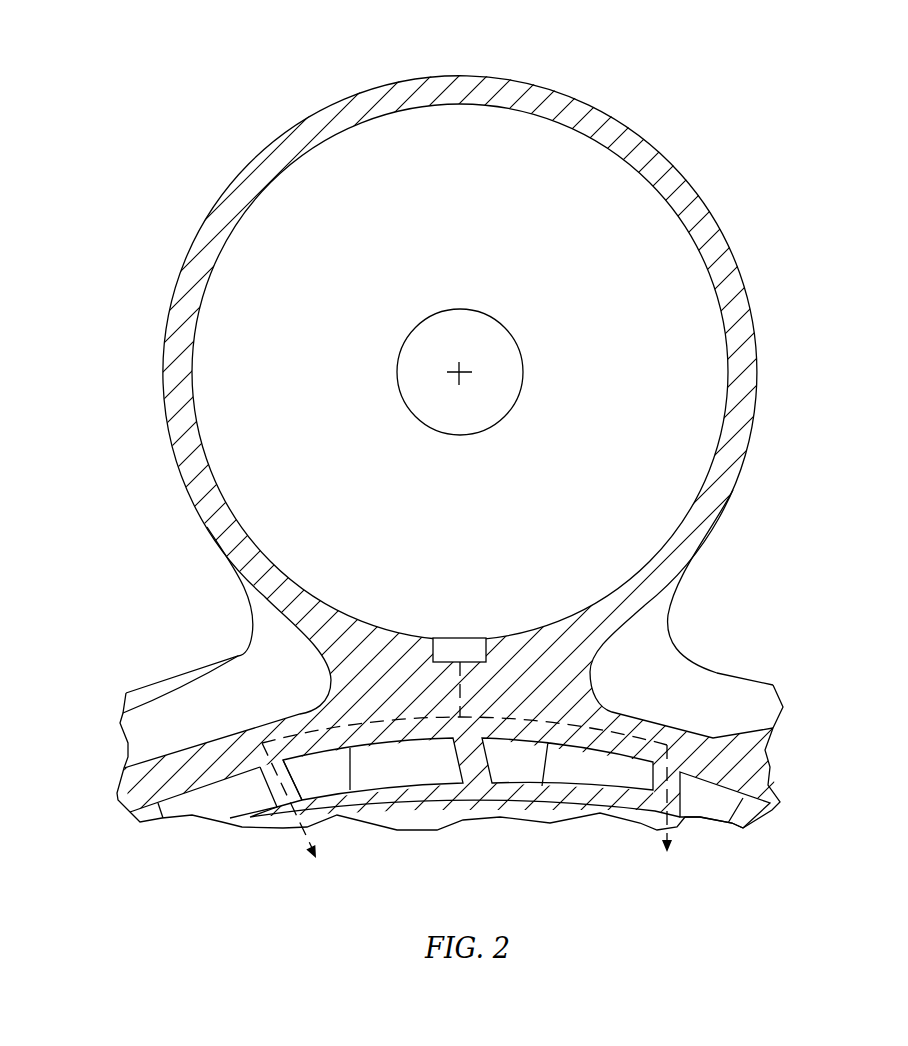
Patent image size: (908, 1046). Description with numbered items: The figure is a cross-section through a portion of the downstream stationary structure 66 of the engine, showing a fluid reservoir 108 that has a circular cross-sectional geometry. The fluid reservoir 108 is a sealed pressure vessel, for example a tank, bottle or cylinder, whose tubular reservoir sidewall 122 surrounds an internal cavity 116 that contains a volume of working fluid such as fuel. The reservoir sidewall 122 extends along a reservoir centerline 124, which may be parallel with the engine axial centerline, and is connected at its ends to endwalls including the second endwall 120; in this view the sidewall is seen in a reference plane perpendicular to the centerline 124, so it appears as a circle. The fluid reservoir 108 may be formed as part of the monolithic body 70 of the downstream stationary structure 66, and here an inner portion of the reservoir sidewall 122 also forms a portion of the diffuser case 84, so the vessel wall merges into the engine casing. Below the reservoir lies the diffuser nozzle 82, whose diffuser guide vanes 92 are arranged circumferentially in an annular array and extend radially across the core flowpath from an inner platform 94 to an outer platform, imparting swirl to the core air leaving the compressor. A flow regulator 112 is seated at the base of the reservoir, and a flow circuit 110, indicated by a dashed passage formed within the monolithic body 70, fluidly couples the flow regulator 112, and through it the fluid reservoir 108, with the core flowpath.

The fluid reservoir 108 is at (621, 119).
The downstream stationary structure 66 is at (749, 131).
The monolithic body 70 is at (227, 672).
The reservoir sidewall 122 is at (760, 375).
The second endwall 120 is at (258, 437).
The internal cavity 116 is at (603, 492).
The reservoir centerline 124 is at (460, 378).
The flow regulator 112 is at (459, 638).
The flow circuit 110 is at (448, 684).
The diffuser case 84 is at (728, 692).
The diffuser nozzle 82 is at (184, 823).
The diffuser guide vanes 92 is at (300, 784).
The inner platform 94 is at (417, 808).